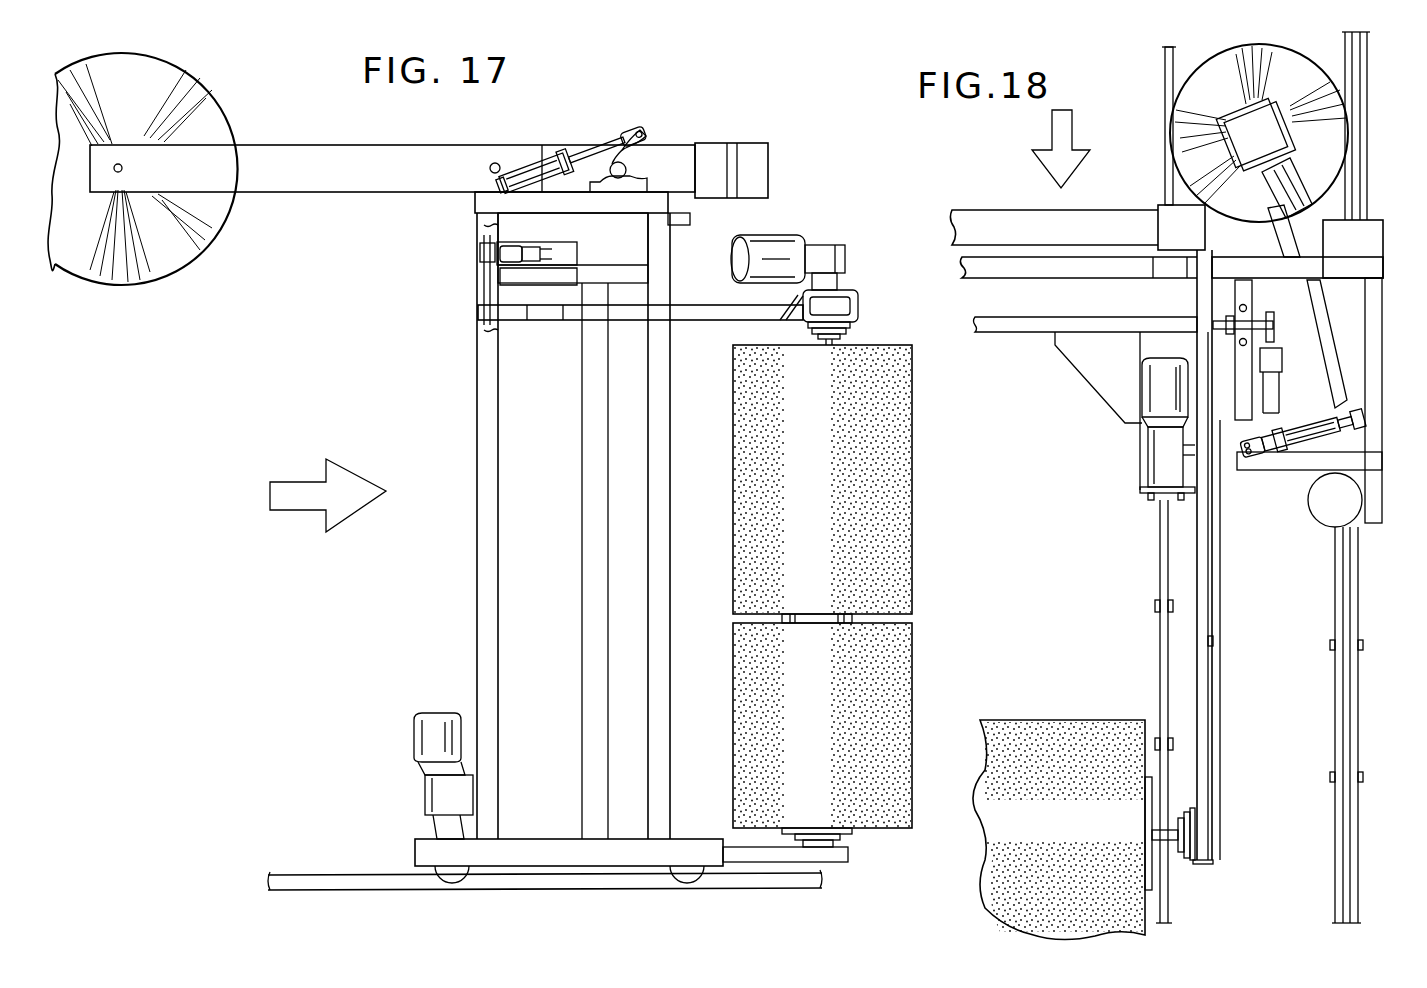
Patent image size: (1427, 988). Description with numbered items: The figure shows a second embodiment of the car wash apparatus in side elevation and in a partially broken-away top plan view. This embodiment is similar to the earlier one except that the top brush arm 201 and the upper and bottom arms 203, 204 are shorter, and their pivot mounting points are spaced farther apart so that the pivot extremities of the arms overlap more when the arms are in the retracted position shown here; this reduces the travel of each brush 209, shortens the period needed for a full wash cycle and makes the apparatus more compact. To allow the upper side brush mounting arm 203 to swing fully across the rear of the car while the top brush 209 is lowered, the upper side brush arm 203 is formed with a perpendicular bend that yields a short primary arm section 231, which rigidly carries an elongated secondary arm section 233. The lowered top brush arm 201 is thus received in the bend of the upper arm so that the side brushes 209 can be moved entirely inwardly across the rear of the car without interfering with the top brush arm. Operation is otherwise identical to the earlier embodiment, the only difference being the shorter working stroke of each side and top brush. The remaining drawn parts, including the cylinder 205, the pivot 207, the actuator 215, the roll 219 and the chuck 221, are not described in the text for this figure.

In FIG. 17, the top brush arm 201 is at (385, 148).
In FIG. 17, the upper side brush mounting arm 203 is at (702, 305).
In FIG. 17, the bottom arm 204 is at (725, 847).
In FIG. 17, the hydraulic cylinder 205 is at (630, 170).
In FIG. 17, the pivot pin 207 is at (122, 166).
In FIG. 17, the brush 209 is at (232, 116).
In FIG. 18, the brush 209 is at (1075, 720).
In FIG. 17, the actuator 215 is at (478, 290).
In FIG. 17, the cylindrical roll / turret 219 is at (905, 432).
In FIG. 18, the cylindrical roll / turret 219 is at (1296, 58).
In FIG. 17, the chuck 221 is at (838, 335).
In FIG. 18, the primary arm section 231 is at (1308, 442).
In FIG. 18, the secondary arm section 233 is at (1346, 268).